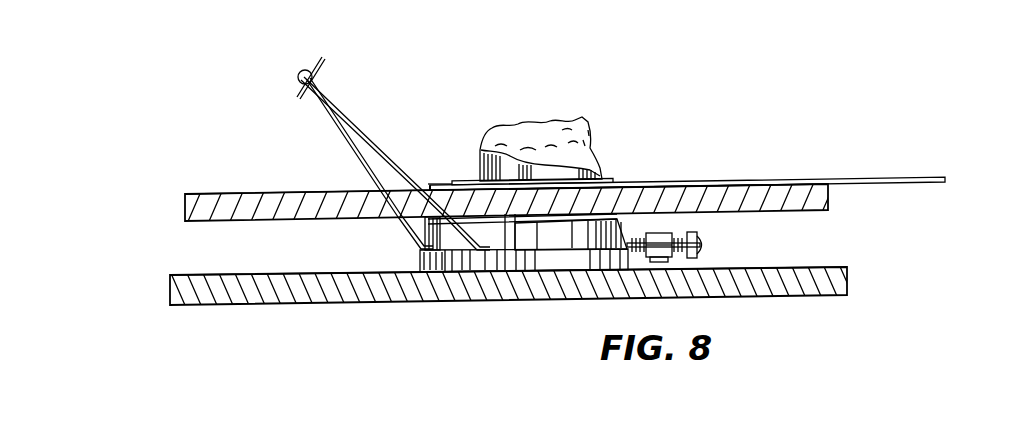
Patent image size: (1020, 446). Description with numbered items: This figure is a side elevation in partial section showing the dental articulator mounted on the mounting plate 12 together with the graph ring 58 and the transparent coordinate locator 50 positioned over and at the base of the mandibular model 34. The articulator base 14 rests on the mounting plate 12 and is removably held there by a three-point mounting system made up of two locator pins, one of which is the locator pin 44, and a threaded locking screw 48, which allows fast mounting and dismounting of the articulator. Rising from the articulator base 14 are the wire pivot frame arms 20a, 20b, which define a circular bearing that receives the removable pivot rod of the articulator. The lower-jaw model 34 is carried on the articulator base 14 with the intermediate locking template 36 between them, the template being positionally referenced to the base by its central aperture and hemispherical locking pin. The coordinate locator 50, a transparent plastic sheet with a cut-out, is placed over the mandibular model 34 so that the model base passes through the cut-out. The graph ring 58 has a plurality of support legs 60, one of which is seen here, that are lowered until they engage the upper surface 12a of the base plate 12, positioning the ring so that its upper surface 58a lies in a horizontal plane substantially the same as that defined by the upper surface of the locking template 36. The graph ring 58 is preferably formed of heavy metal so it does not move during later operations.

The mounting plate 12 is at (172, 294).
The upper surface of the base plate 12a is at (191, 274).
The articulator base 14 is at (428, 234).
The wire pivot frame arm 20a is at (381, 151).
The wire pivot frame arm 20b is at (362, 161).
The mandibular model 34 is at (598, 178).
The locking template 36 is at (441, 187).
The locator pin 44 is at (447, 266).
The threaded locking screw 48 is at (699, 251).
The coordinate locator 50 is at (793, 178).
The graph ring 58 is at (184, 208).
The upper surface of the graph ring 58a is at (237, 193).
The support leg 60 is at (507, 244).